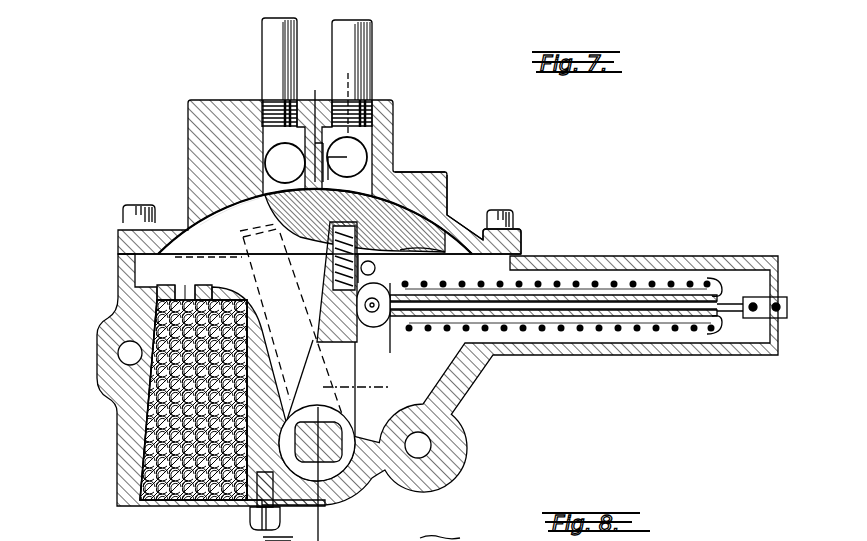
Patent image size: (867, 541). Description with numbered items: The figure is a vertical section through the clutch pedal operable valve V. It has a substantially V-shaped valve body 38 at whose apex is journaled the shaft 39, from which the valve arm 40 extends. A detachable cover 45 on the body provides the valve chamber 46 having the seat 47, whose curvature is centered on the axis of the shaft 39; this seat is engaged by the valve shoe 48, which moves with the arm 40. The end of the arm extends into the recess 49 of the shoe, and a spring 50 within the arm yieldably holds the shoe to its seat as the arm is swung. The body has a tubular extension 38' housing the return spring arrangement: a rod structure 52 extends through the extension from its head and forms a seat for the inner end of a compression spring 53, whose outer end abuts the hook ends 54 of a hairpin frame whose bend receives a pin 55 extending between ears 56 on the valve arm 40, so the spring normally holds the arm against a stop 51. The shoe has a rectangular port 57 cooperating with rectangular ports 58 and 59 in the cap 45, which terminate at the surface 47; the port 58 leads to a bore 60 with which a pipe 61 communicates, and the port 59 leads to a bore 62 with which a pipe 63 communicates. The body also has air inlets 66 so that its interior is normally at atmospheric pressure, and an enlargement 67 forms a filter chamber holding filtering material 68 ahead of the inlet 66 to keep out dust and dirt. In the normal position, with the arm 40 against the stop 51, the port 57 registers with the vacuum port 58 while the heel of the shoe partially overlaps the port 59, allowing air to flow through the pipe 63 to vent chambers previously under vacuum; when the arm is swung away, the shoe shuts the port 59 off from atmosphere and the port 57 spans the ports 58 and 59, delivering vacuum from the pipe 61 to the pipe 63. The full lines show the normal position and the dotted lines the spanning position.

The clutch pedal operable valve V is at (185, 200).
The pipe 63 is at (270, 40).
The pipe 61 is at (372, 43).
The bore 62 is at (273, 157).
The bore 60 is at (357, 153).
The rectangular port 58 is at (316, 125).
The recess 49 is at (387, 210).
The rectangular port 57 is at (400, 214).
The detachable cover 45 is at (445, 172).
The seat 47 is at (447, 200).
The valve chamber 46 is at (453, 247).
The rectangular port 59 is at (242, 197).
The air inlets 66 is at (202, 290).
The spring 50 is at (327, 267).
The stop 51 is at (375, 268).
The valve shoe 48 is at (403, 253).
The ears 56 is at (360, 323).
The pin 55 is at (390, 330).
The compression spring 53 is at (637, 283).
The hook ends 54 is at (707, 277).
The rod structure 52 is at (720, 310).
The tubular extension 38' is at (566, 333).
The valve body 38 is at (458, 400).
The valve arm 40 is at (337, 372).
The shaft 39 is at (330, 433).
The enlargement 67 is at (125, 430).
The filtering material 68 is at (178, 503).